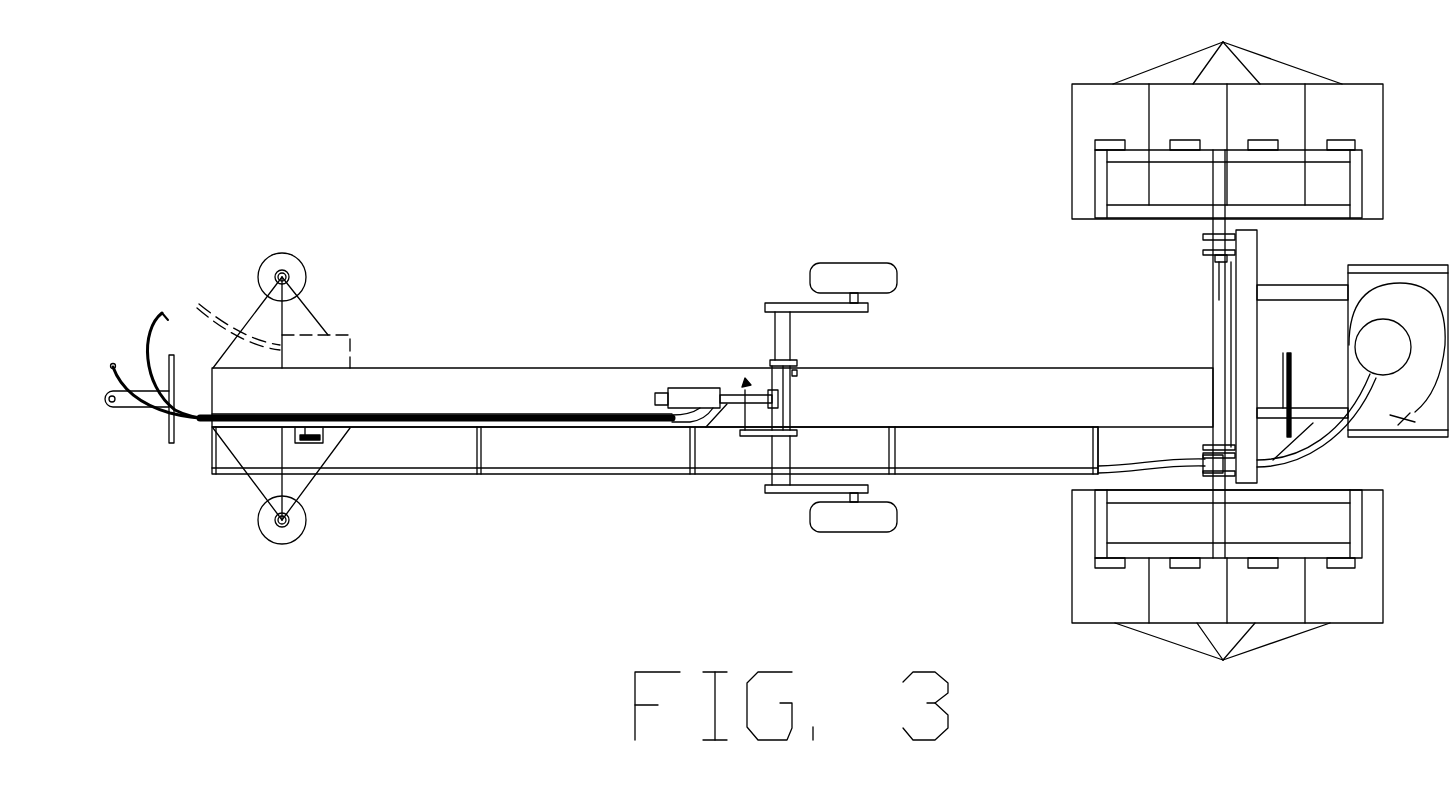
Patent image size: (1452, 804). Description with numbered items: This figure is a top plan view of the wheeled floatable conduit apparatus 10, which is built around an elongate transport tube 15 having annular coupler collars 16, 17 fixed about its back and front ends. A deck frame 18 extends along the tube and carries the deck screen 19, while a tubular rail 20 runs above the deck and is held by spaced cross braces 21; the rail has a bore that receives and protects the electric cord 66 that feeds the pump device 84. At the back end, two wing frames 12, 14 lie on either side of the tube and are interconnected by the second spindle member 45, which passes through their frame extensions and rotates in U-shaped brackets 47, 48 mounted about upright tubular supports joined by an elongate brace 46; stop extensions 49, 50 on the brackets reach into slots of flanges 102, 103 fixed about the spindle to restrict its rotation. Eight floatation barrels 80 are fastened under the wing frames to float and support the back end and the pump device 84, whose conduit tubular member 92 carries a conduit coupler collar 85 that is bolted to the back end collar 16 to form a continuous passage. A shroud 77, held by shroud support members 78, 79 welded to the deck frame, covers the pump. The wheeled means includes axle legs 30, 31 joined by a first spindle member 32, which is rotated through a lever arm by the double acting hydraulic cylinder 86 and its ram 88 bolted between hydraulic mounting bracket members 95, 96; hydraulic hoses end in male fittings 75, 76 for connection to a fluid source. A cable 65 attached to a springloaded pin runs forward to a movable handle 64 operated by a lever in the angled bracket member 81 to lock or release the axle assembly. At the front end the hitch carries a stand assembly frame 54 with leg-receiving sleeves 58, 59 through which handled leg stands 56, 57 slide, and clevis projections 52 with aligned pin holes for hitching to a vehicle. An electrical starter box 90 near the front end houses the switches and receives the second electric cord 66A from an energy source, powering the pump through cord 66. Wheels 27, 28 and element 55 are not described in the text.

The wheeled floatable conduit apparatus 10 is at (612, 223).
The wing frame 12 is at (1095, 522).
The wing frame 14 is at (1095, 175).
The transport tube 15 is at (597, 428).
The coupler collar 16 is at (1283, 355).
The coupler collar 17 is at (169, 440).
The deck frame 18 is at (455, 428).
The deck screen 19 is at (408, 392).
The tubular rail 20 is at (428, 478).
The cross braces 21 is at (210, 462).
The wheel 27 is at (850, 533).
The wheel 28 is at (858, 265).
The axle leg 30 is at (768, 495).
The axle leg 31 is at (765, 306).
The first spindle member 32 is at (768, 478).
The second spindle member 45 is at (1212, 300).
The elongate brace 46 is at (1257, 246).
The U-shaped bracket 47 is at (1203, 473).
The U-shaped bracket 48 is at (1203, 237).
The stop extension 49 is at (1217, 440).
The stop extension 50 is at (1215, 268).
The clevis projections 52 is at (108, 408).
The stand assembly frame 54 is at (250, 498).
The upper pulley support arms 55 is at (258, 300).
The handled leg stand 56 is at (282, 520).
The handled leg stand 57 is at (282, 277).
The leg-receiving sleeve 58 is at (282, 520).
The leg-receiving sleeve 59 is at (282, 277).
The movable handle 64 is at (323, 436).
The cable 65 is at (528, 428).
The electric cord 66 is at (1340, 447).
The second electric cord 66A is at (203, 300).
The male fitting 75 is at (110, 367).
The male fitting 76 is at (179, 366).
The shroud 77 is at (1395, 265).
The shroud support member 78 is at (1318, 408).
The shroud support member 79 is at (1297, 283).
The floatation barrels 80 is at (1227, 351).
The angled bracket member 81 is at (314, 441).
The pump device 84 is at (1400, 370).
The conduit coupler collar 85 is at (1291, 355).
The double acting hydraulic cylinder 86 is at (696, 386).
The ram 88 is at (760, 393).
The electrical starter box 90 is at (352, 347).
The conduit tubular member 92 is at (1360, 434).
The hydraulic mounting bracket member 95 is at (787, 398).
The hydraulic mounting bracket member 96 is at (655, 397).
The flange 102 is at (1203, 447).
The flange 103 is at (1215, 264).